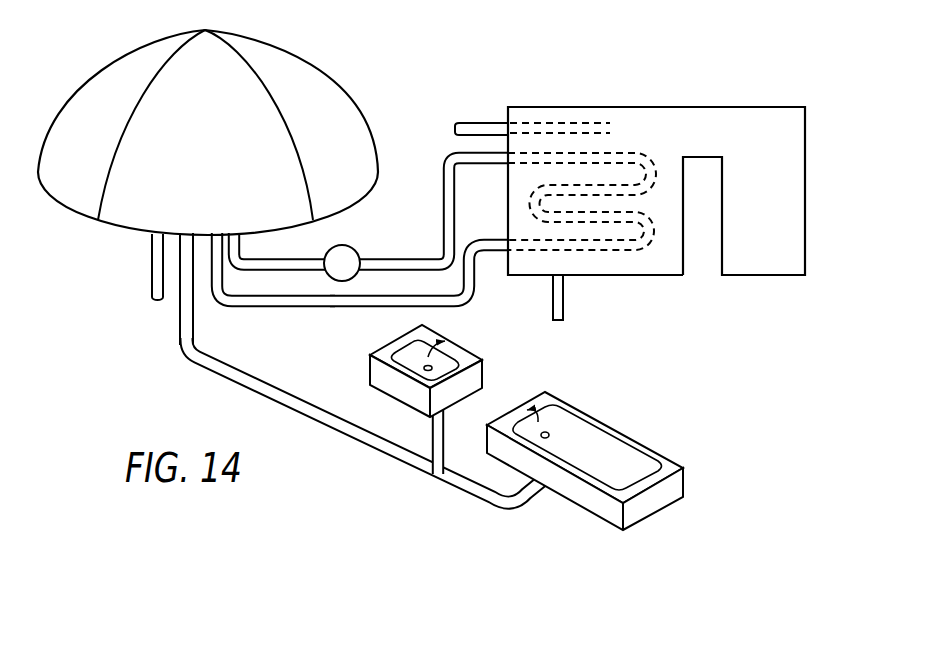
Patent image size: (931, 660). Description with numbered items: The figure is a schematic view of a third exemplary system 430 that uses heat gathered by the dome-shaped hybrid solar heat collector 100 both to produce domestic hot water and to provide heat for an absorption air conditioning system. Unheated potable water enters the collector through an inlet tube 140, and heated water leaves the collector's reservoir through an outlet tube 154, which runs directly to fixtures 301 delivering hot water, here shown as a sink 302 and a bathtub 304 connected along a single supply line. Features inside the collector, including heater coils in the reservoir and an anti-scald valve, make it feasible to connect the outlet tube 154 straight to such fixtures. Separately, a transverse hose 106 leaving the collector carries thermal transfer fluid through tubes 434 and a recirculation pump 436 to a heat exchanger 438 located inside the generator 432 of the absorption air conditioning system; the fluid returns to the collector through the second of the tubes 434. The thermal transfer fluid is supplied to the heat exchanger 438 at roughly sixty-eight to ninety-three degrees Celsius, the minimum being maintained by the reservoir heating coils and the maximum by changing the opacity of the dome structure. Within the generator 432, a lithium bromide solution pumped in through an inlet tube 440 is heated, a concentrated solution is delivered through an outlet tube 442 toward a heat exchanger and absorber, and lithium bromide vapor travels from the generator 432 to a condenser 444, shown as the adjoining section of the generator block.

The solar heat collector 100 is at (293, 52).
The transverse hose 106 is at (240, 244).
The inlet tube 140 is at (148, 265).
The outlet tube 154 is at (177, 322).
The fixtures 301 is at (381, 484).
The sink 302 is at (484, 378).
The bathtub 304 is at (644, 443).
The third exemplary system 430 is at (121, 417).
The generator 432 is at (607, 103).
The tubes 434 is at (441, 182).
The recirculation pump 436 is at (351, 247).
The heat exchanger 438 is at (620, 254).
The inlet tube 440 is at (487, 122).
The outlet tube 442 is at (565, 303).
The condenser 444 is at (760, 103).